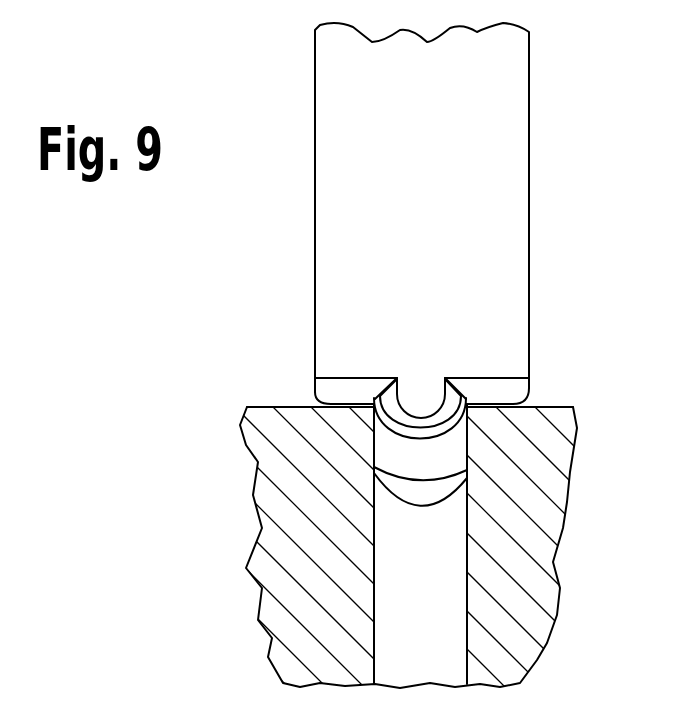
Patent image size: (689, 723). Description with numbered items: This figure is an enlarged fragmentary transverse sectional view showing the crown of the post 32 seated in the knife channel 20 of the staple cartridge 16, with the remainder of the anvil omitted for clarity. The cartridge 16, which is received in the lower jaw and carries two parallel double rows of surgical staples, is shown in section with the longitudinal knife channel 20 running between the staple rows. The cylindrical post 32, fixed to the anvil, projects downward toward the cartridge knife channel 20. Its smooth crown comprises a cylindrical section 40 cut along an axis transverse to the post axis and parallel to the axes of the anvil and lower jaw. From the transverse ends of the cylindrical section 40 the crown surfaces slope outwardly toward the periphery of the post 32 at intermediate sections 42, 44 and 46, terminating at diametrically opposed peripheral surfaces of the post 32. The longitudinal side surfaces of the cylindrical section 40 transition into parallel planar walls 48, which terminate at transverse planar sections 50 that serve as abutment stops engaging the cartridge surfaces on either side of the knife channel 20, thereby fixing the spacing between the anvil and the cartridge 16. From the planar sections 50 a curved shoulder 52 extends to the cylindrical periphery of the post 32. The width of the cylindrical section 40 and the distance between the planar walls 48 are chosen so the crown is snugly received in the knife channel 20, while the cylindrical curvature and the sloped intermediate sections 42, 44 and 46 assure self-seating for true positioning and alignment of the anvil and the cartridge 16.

The staple cartridge 16 is at (250, 492).
The knife channel 20 is at (440, 632).
The post 32 is at (528, 283).
The cylindrical section 40 is at (425, 503).
The intermediate section 42 is at (435, 483).
The intermediate section 44 is at (442, 467).
The intermediate section 46 is at (405, 412).
The planar walls 48 is at (375, 453).
The planar sections 50 is at (356, 400).
The curved shoulder 52 is at (470, 453).